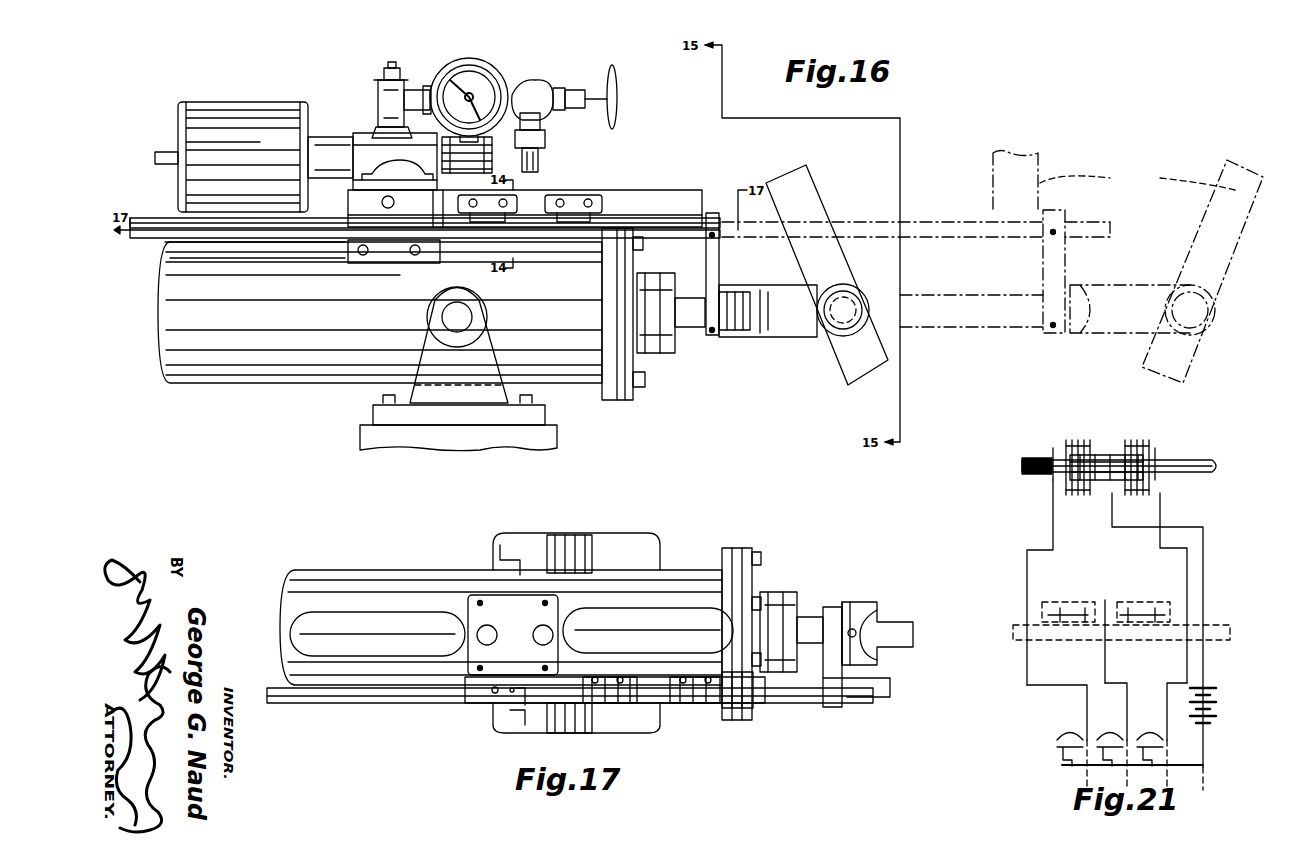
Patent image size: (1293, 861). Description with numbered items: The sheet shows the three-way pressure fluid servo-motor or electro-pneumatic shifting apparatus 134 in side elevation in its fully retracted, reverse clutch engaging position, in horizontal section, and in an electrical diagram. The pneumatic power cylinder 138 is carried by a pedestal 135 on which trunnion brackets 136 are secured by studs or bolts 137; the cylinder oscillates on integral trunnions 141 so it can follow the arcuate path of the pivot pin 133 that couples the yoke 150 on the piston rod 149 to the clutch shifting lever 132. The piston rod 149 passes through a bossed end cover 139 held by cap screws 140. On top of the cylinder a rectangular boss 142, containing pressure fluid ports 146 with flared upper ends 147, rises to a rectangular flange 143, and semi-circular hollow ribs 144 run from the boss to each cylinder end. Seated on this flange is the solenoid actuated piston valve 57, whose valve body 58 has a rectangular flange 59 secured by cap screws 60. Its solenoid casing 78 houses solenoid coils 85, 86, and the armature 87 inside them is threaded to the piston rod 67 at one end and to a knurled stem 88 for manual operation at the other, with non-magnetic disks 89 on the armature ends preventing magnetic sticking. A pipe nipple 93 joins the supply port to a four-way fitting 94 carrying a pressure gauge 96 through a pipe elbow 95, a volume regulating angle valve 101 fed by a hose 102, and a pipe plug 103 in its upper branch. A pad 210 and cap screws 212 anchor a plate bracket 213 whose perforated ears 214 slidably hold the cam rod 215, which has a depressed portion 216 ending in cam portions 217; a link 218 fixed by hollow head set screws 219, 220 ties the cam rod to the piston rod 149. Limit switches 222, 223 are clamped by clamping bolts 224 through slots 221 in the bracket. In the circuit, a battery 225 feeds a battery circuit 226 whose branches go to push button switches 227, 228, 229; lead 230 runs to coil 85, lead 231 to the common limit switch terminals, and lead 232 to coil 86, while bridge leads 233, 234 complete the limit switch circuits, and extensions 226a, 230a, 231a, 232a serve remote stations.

In FIG. 16, the solenoid actuated piston valve 57 is at (295, 90).
In FIG. 16, the valve body 58 is at (335, 137).
In FIG. 16, the rectangular flange 59 is at (360, 148).
In FIG. 16, the cap screws 60 is at (397, 166).
In FIG. 17, the cap screws 60 is at (544, 604).
In FIG. 21, the piston rod 67 is at (1200, 462).
In FIG. 16, the solenoid casing 78 is at (220, 100).
In FIG. 21, the solenoid coil 85 is at (1055, 450).
In FIG. 21, the solenoid coil 86 is at (1155, 448).
In FIG. 21, the armature 87 is at (1110, 455).
In FIG. 16, the knurled stem 88 is at (165, 152).
In FIG. 21, the knurled stem 88 is at (1035, 460).
In FIG. 16, the non-magnetic disks 89 is at (482, 155).
In FIG. 21, the non-magnetic disks 89 is at (1073, 442).
In FIG. 16, the pipe nipple 93 is at (380, 127).
In FIG. 16, the four-way fitting 94 is at (380, 95).
In FIG. 16, the pipe elbow 95 is at (410, 88).
In FIG. 16, the pressure gauge 96 is at (495, 54).
In FIG. 16, the pressure fluid volume regulating angle valve 101 is at (540, 82).
In FIG. 16, the hose 102 is at (545, 142).
In FIG. 16, the pipe plug 103 is at (395, 62).
In FIG. 16, the clutch shifting lever 132 is at (800, 195).
In FIG. 16, the pivot pin 133 is at (840, 318).
In FIG. 16, the three-way electro-pneumatic shifting apparatus 134 is at (705, 410).
In FIG. 17, the three-way electro-pneumatic shifting apparatus 134 is at (358, 732).
In FIG. 16, the pedestal 135 is at (428, 440).
In FIG. 16, the trunnion brackets 136 is at (482, 425).
In FIG. 17, the trunnion brackets 136 is at (620, 535).
In FIG. 16, the studs or bolts 137 is at (385, 398).
In FIG. 16, the pneumatic power cylinder 138 is at (245, 365).
In FIG. 17, the pneumatic power cylinder 138 is at (330, 580).
In FIG. 16, the bossed end cover 139 is at (620, 400).
In FIG. 17, the bossed end cover 139 is at (745, 548).
In FIG. 16, the cap screws 140 is at (640, 388).
In FIG. 17, the cap screws 140 is at (762, 560).
In FIG. 16, the trunnions 141 is at (455, 325).
In FIG. 17, the trunnions 141 is at (572, 535).
In FIG. 16, the rectangular boss 142 is at (318, 258).
In FIG. 17, the rectangular boss 142 is at (430, 615).
In FIG. 17, the rectangular flange 143 is at (490, 595).
In FIG. 16, the semi-circular hollow ribs 144 is at (200, 223).
In FIG. 17, the semi-circular hollow ribs 144 is at (318, 635).
In FIG. 17, the pressure fluid ports 146 is at (478, 640).
In FIG. 17, the flared upper ends 147 is at (487, 650).
In FIG. 16, the piston rod 149 is at (690, 327).
In FIG. 17, the piston rod 149 is at (808, 617).
In FIG. 16, the yoke 150 is at (785, 337).
In FIG. 17, the yoke 150 is at (890, 655).
In FIG. 16, the pad 210 is at (362, 263).
In FIG. 16, the cap screws 212 is at (414, 263).
In FIG. 17, the cap screws 212 is at (510, 695).
In FIG. 16, the plate bracket 213 is at (615, 190).
In FIG. 17, the plate bracket 213 is at (655, 680).
In FIG. 16, the perforated ears 214 is at (440, 214).
In FIG. 17, the perforated ears 214 is at (545, 705).
In FIG. 16, the cam rod 215 is at (140, 240).
In FIG. 17, the cam rod 215 is at (300, 705).
In FIG. 21, the cam rod 215 is at (1218, 630).
In FIG. 16, the depressed portion 216 is at (555, 262).
In FIG. 17, the depressed portion 216 is at (525, 700).
In FIG. 21, the depressed portion 216 is at (1015, 640).
In FIG. 16, the cam portions 217 is at (575, 283).
In FIG. 17, the cam portions 217 is at (490, 695).
In FIG. 21, the cam portions 217 is at (1160, 657).
In FIG. 16, the link 218 is at (719, 264).
In FIG. 17, the link 218 is at (836, 660).
In FIG. 16, the hollow head set screw 219 is at (713, 334).
In FIG. 16, the hollow head set screw 220 is at (712, 238).
In FIG. 16, the slots 221 is at (535, 195).
In FIG. 16, the limit switch 222 is at (475, 222).
In FIG. 17, the limit switch 222 is at (610, 705).
In FIG. 21, the limit switch 222 is at (1050, 605).
In FIG. 16, the limit switch 223 is at (575, 195).
In FIG. 17, the limit switch 223 is at (695, 705).
In FIG. 21, the limit switch 223 is at (1160, 603).
In FIG. 16, the clamping bolts 224 is at (503, 199).
In FIG. 17, the clamping bolts 224 is at (595, 676).
In FIG. 21, the battery 225 is at (1216, 710).
In FIG. 21, the battery circuit 226 is at (1203, 536).
In FIG. 21, the battery circuit extension 226a is at (1203, 774).
In FIG. 21, the push button switch 227 is at (1062, 738).
In FIG. 21, the push button switch 228 is at (1103, 735).
In FIG. 21, the push button switch 229 is at (1158, 738).
In FIG. 21, the lead 230 is at (1027, 668).
In FIG. 21, the lead extension 230a is at (1062, 761).
In FIG. 21, the lead 231 is at (1105, 666).
In FIG. 21, the lead extension 231a is at (1130, 745).
In FIG. 21, the lead 232 is at (1190, 681).
In FIG. 21, the lead extension 232a is at (1175, 765).
In FIG. 21, the bridge lead 233 is at (1032, 610).
In FIG. 21, the bridge lead 234 is at (1178, 608).